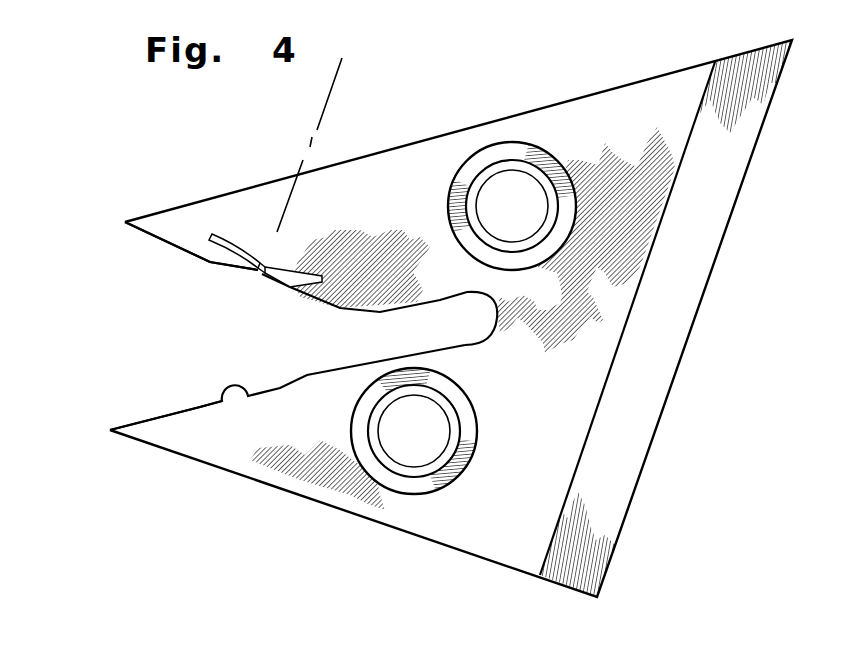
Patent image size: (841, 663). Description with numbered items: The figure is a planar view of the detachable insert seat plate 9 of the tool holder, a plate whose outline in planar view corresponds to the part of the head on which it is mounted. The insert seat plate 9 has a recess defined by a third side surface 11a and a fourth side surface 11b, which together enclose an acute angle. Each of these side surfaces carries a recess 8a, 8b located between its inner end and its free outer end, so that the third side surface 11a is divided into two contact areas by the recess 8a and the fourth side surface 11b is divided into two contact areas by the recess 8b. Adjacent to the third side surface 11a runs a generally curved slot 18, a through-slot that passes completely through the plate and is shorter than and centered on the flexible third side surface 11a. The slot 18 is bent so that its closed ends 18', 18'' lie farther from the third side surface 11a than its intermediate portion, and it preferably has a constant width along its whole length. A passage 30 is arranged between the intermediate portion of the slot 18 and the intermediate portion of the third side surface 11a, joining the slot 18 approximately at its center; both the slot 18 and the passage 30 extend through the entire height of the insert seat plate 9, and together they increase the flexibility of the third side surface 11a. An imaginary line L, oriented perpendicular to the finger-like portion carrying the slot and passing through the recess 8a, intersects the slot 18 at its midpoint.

The insert seat plate 9 is at (440, 120).
The recess 8a is at (258, 264).
The recess 8b is at (222, 397).
The third side surface 11a is at (315, 270).
The fourth side surface 11b is at (307, 375).
The slot 18 is at (307, 182).
The closed end of the slot 18' is at (234, 175).
The closed end of the slot 18'' is at (335, 182).
The passage 30 is at (258, 268).
The imaginary line L is at (325, 88).